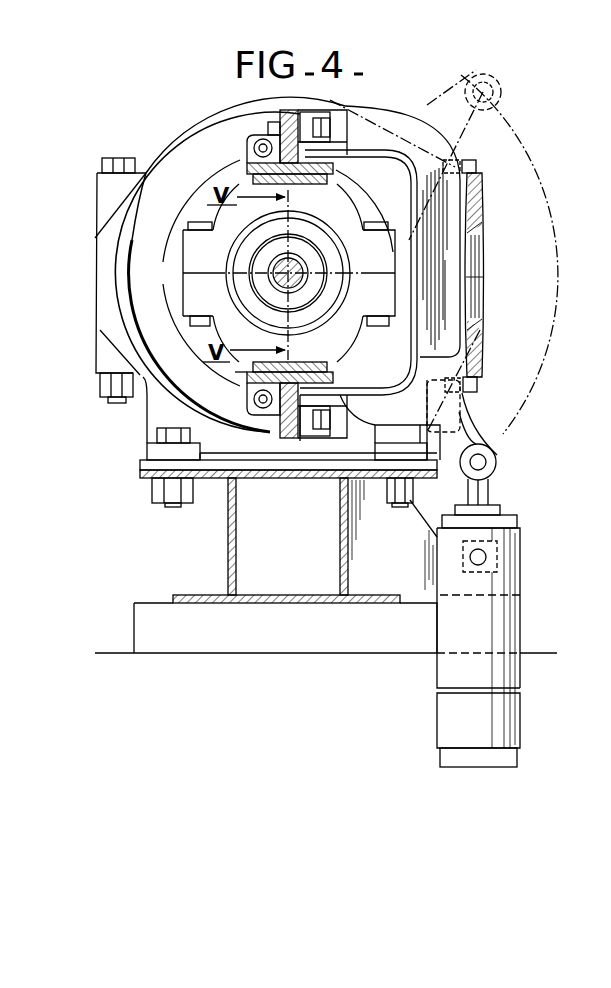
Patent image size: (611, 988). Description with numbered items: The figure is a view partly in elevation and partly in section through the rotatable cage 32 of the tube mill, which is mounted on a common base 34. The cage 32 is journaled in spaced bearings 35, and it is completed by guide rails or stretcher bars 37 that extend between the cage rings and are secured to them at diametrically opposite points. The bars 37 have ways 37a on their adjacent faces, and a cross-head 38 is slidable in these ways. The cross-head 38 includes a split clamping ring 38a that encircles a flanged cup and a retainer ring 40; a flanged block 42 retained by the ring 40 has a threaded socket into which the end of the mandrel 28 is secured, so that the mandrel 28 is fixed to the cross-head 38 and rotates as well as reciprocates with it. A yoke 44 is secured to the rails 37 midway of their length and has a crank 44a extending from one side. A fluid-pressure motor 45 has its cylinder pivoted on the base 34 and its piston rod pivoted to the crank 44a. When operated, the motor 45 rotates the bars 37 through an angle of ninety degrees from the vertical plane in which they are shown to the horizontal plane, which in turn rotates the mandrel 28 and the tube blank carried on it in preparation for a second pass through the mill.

The mandrel 28 is at (276, 270).
The cage 32 is at (190, 130).
The common base 34 is at (339, 567).
The spaced bearings 35 is at (222, 122).
The guide rails or stretcher bars 37 is at (327, 145).
The ways 37a is at (240, 372).
The cross-head 38 is at (181, 262).
The split clamping ring 38a is at (227, 298).
The retainer ring 40 is at (210, 298).
The flanged block 42 is at (318, 285).
The yoke 44 is at (390, 118).
The crank 44a is at (467, 430).
The fluid-pressure motor 45 is at (520, 695).